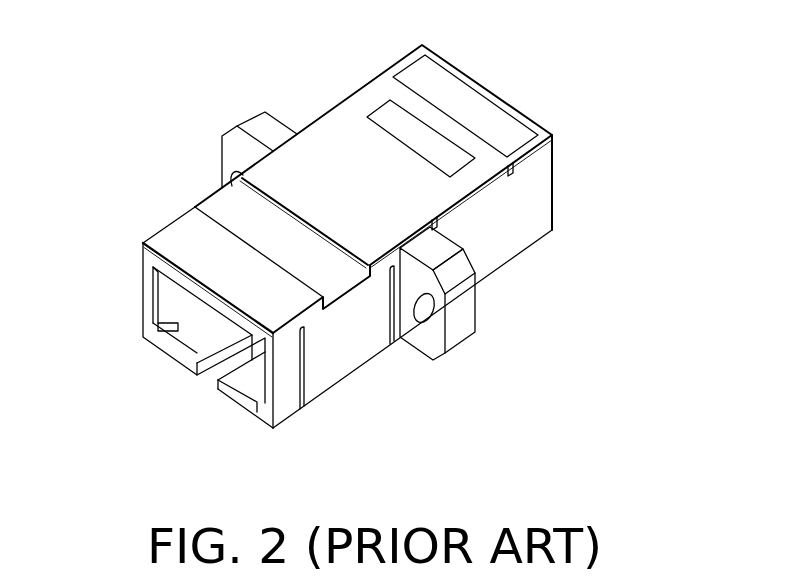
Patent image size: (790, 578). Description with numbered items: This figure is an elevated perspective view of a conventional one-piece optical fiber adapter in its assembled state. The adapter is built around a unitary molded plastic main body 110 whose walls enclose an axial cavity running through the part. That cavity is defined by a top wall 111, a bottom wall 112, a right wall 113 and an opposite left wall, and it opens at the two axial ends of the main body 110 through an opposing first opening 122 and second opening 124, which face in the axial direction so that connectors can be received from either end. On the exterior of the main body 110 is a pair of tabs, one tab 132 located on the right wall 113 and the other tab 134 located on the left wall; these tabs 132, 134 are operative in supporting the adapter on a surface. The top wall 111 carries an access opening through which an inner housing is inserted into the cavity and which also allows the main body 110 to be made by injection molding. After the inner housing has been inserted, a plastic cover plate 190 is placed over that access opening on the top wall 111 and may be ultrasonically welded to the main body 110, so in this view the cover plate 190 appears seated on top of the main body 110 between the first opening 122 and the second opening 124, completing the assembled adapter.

The main body 110 is at (535, 258).
The top wall 111 is at (175, 243).
The bottom wall 112 is at (237, 402).
The right wall 113 is at (358, 341).
The first opening 122 is at (183, 342).
The second opening 124 is at (555, 110).
The tab 132 is at (460, 318).
The tab 134 is at (250, 113).
The cover plate 190 is at (330, 150).